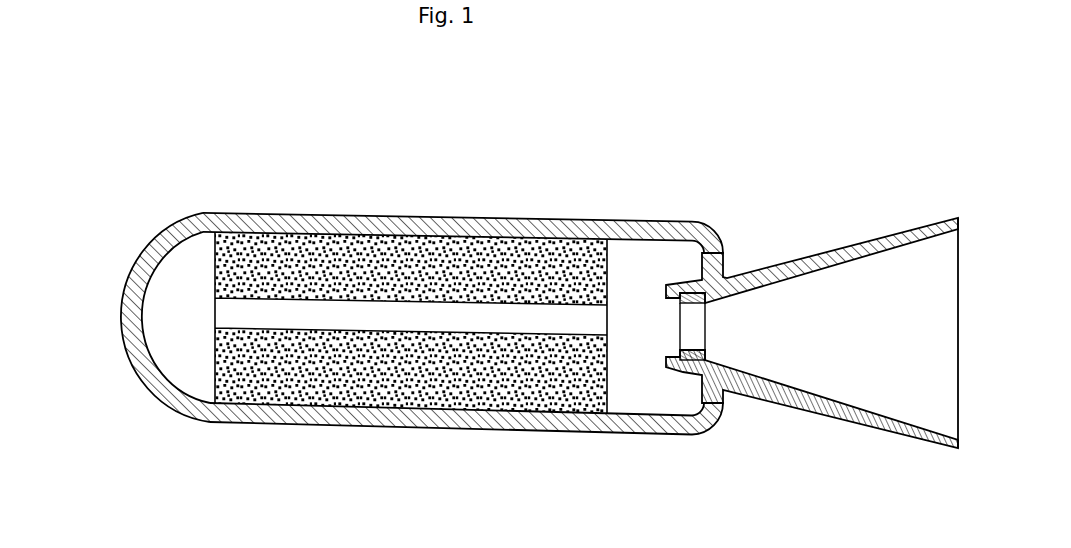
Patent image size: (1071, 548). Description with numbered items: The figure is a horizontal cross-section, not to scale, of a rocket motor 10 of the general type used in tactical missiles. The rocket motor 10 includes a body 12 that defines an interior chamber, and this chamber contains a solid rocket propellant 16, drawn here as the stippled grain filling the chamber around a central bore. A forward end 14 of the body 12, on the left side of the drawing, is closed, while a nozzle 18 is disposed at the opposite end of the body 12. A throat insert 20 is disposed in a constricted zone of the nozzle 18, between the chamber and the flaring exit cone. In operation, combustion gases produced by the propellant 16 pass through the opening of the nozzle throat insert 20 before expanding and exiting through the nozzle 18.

The rocket motor 10 is at (509, 259).
The body 12 is at (309, 205).
The forward end 14 is at (100, 356).
The solid rocket propellant 16 is at (421, 254).
The nozzle 18 is at (806, 250).
The throat insert 20 is at (701, 334).